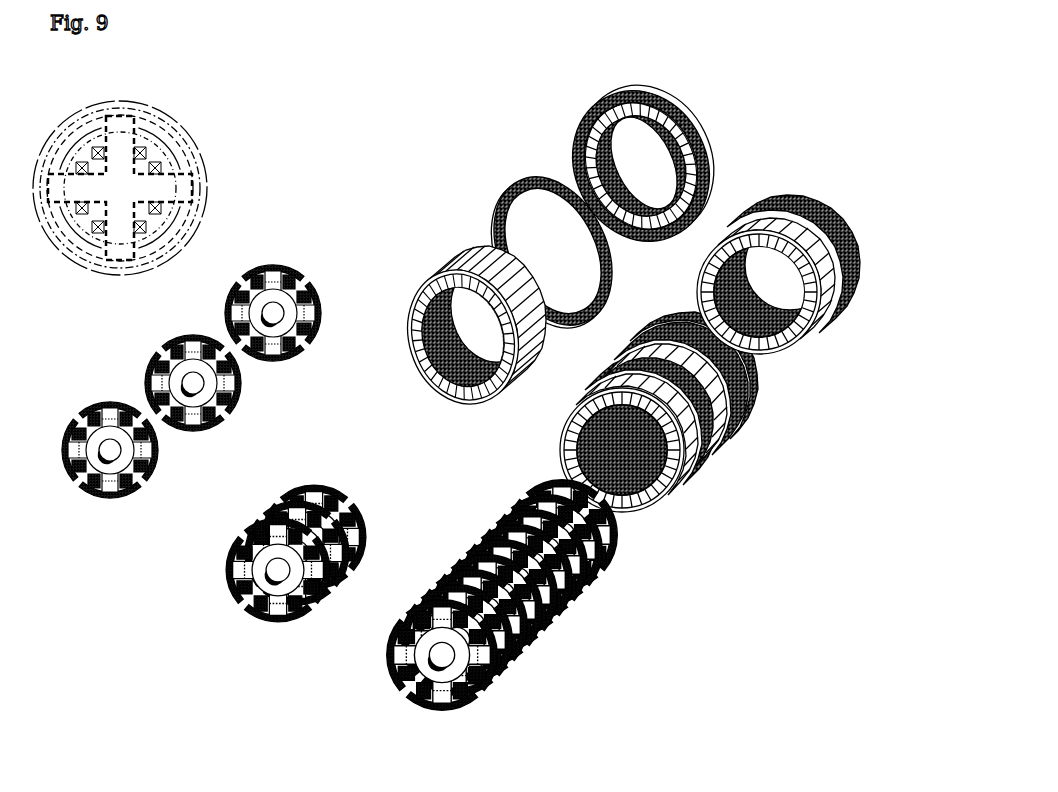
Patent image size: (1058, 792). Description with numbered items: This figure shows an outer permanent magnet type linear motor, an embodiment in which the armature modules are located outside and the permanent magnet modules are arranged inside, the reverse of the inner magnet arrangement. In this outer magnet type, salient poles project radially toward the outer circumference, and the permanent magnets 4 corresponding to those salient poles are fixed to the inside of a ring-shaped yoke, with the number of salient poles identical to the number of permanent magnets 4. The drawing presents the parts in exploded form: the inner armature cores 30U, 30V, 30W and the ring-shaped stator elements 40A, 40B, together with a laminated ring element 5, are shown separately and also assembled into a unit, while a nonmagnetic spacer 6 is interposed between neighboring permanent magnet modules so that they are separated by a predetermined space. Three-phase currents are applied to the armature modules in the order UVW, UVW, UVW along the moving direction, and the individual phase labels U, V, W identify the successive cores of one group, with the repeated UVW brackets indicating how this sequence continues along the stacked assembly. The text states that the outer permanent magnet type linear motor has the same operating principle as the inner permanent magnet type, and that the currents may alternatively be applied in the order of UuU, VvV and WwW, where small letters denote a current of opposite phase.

The permanent magnet 4 is at (465, 375).
The laminated stator core 5 is at (440, 348).
The nonmagnetic spacer 6 is at (520, 182).
The stator core 40A is at (747, 196).
The stator core 40B is at (672, 109).
The rotor core U 30U is at (165, 468).
The rotor core V 30V is at (245, 400).
The rotor core W 30W is at (340, 300).
The U-phase U is at (256, 518).
The V-phase V is at (275, 497).
The W-phase W is at (303, 477).
The UVW phase order UVW is at (613, 585).